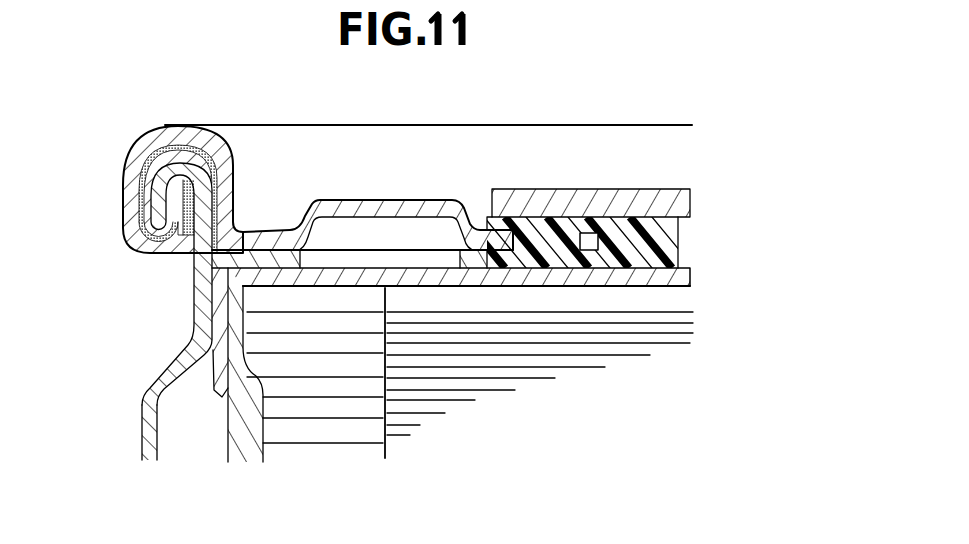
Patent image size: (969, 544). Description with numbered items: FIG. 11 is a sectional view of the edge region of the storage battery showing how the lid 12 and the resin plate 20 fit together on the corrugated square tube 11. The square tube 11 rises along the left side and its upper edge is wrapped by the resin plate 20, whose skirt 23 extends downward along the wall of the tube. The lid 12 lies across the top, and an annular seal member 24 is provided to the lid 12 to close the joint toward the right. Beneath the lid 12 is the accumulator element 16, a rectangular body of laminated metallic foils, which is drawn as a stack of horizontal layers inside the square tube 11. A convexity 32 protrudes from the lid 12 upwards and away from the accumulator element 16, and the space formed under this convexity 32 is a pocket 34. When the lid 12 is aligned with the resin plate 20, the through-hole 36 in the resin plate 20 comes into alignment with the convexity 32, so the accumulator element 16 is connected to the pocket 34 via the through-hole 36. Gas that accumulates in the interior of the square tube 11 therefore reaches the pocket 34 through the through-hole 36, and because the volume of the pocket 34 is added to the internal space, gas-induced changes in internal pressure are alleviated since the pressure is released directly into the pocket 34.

The square tube 11 is at (140, 432).
The lid 12 is at (595, 125).
The accumulator element 16 is at (548, 433).
The resin plate 20 is at (266, 232).
The skirt 23 is at (219, 369).
The seal member 24 is at (679, 243).
The convexity 32 is at (372, 200).
The pocket 34 is at (418, 225).
The through-hole 36 is at (308, 255).